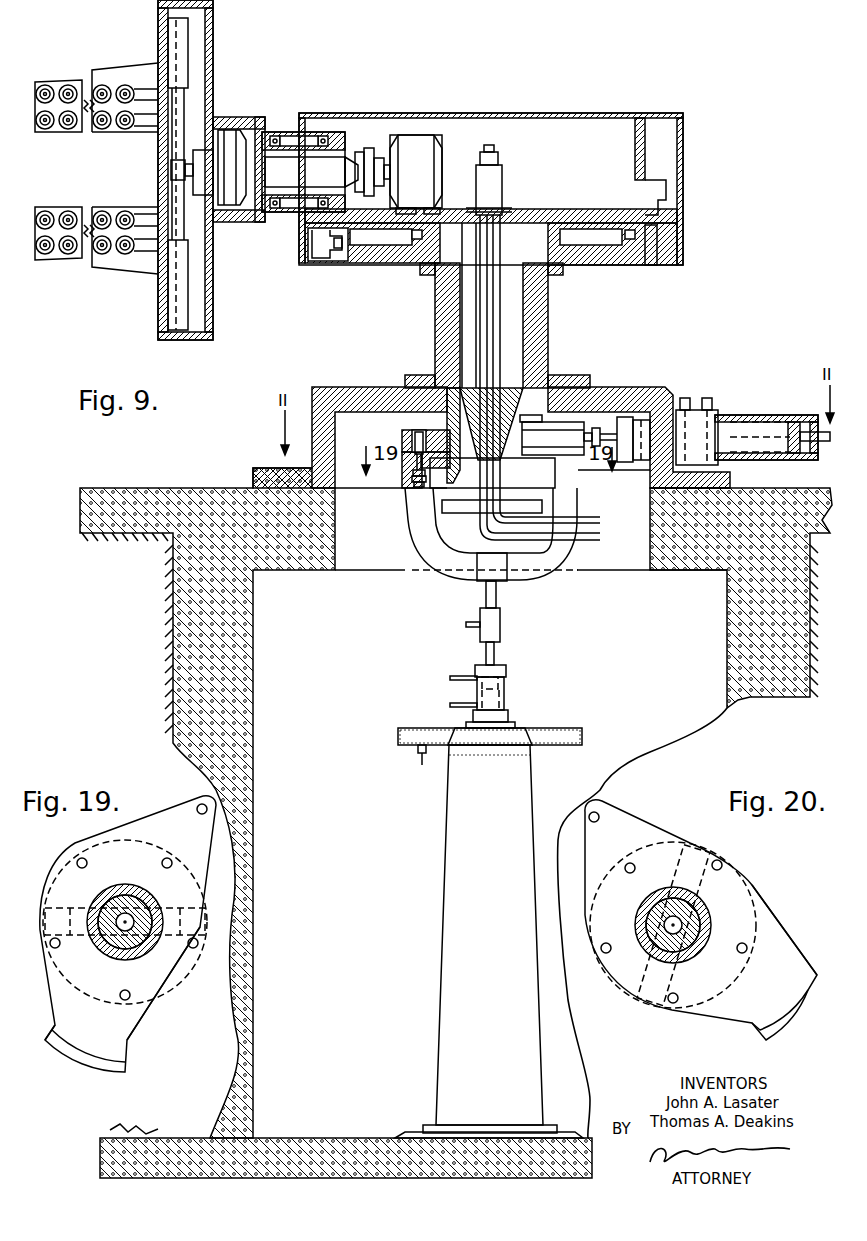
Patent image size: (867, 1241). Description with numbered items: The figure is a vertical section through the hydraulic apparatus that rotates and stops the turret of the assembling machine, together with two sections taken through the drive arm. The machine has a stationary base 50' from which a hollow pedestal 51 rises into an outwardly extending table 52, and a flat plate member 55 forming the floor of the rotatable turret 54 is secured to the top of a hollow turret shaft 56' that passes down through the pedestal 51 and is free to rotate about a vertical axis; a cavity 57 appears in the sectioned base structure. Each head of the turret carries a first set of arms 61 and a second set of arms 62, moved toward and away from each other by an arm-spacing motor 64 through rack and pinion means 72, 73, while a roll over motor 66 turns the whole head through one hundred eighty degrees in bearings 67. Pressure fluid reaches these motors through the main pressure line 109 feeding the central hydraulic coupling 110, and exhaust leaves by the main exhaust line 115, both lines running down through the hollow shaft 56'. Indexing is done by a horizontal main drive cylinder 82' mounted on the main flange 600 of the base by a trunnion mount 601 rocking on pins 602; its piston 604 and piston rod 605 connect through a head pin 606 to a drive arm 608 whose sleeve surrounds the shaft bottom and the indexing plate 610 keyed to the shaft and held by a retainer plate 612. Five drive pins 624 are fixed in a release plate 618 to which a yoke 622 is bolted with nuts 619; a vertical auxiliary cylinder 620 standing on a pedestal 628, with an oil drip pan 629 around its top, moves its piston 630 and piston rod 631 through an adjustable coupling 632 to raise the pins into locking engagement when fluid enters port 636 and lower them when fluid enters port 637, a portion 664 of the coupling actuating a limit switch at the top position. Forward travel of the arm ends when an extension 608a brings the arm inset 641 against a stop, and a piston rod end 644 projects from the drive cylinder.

In FIG. 9, the stationary base 50' is at (491, 431).
In FIG. 9, the hollow pedestal 51 is at (547, 328).
In FIG. 9, the table 52 is at (375, 263).
In FIG. 9, the rotatable turret 54 is at (512, 110).
In FIG. 9, the flat plate member 55 is at (562, 208).
In FIG. 9, the hollow turret shaft 56' is at (470, 360).
In FIG. 19, the hollow turret shaft 56' is at (115, 937).
In FIG. 20, the hollow turret shaft 56' is at (695, 921).
In FIG. 9, the cavity 57 is at (362, 236).
In FIG. 9, the first set of arms 61 is at (92, 80).
In FIG. 9, the second set of arms 62 is at (100, 268).
In FIG. 9, the arm-spacing motor 64 is at (229, 169).
In FIG. 9, the roll over motor 66 is at (398, 174).
In FIG. 9, the bearings 67 is at (312, 195).
In FIG. 9, the rack and pinion means 72 is at (173, 148).
In FIG. 9, the rack and pinion means 73 is at (170, 170).
In FIG. 9, the main drive cylinder 82' is at (760, 416).
In FIG. 9, the main pressure line 109 is at (500, 330).
In FIG. 9, the central hydraulic coupling 110 is at (503, 172).
In FIG. 9, the main exhaust line 115 is at (484, 325).
In FIG. 9, the main flange 600 is at (262, 470).
In FIG. 9, the trunnion mount 601 is at (715, 405).
In FIG. 9, the pins 602 is at (695, 408).
In FIG. 9, the piston 604 is at (792, 415).
In FIG. 9, the piston rod 605 is at (600, 425).
In FIG. 19, the head pin 606 is at (202, 804).
In FIG. 20, the head pin 606 is at (598, 813).
In FIG. 9, the drive arm 608 is at (453, 478).
In FIG. 19, the drive arm 608 is at (140, 814).
In FIG. 20, the drive arm 608 is at (645, 820).
In FIG. 19, the extension 608a is at (118, 1055).
In FIG. 20, the extension 608a is at (793, 975).
In FIG. 9, the indexing plate 610 is at (408, 432).
In FIG. 19, the indexing plate 610 is at (112, 888).
In FIG. 20, the indexing plate 610 is at (640, 920).
In FIG. 9, the retainer plate 612 is at (462, 513).
In FIG. 9, the release plate 618 is at (410, 484).
In FIG. 9, the nuts 619 is at (414, 487).
In FIG. 9, the auxiliary cylinder 620 is at (506, 700).
In FIG. 9, the yoke 622 is at (418, 560).
In FIG. 19, the yoke 622 is at (56, 912).
In FIG. 20, the yoke 622 is at (640, 965).
In FIG. 9, the drive pins 624 is at (425, 444).
In FIG. 19, the drive pins 624 is at (130, 995).
In FIG. 20, the drive pins 624 is at (740, 953).
In FIG. 9, the pedestal 628 is at (440, 890).
In FIG. 9, the oil drip pan 629 is at (398, 736).
In FIG. 9, the piston 630 is at (506, 683).
In FIG. 9, the piston rod 631 is at (495, 658).
In FIG. 9, the adjustable coupling 632 is at (500, 620).
In FIG. 9, the port 636 is at (450, 705).
In FIG. 9, the port 637 is at (450, 678).
In FIG. 19, the arm inset 641 is at (43, 1037).
In FIG. 20, the arm inset 641 is at (760, 1040).
In FIG. 9, the piston rod 644 is at (828, 442).
In FIG. 9, the portion 664 is at (466, 624).